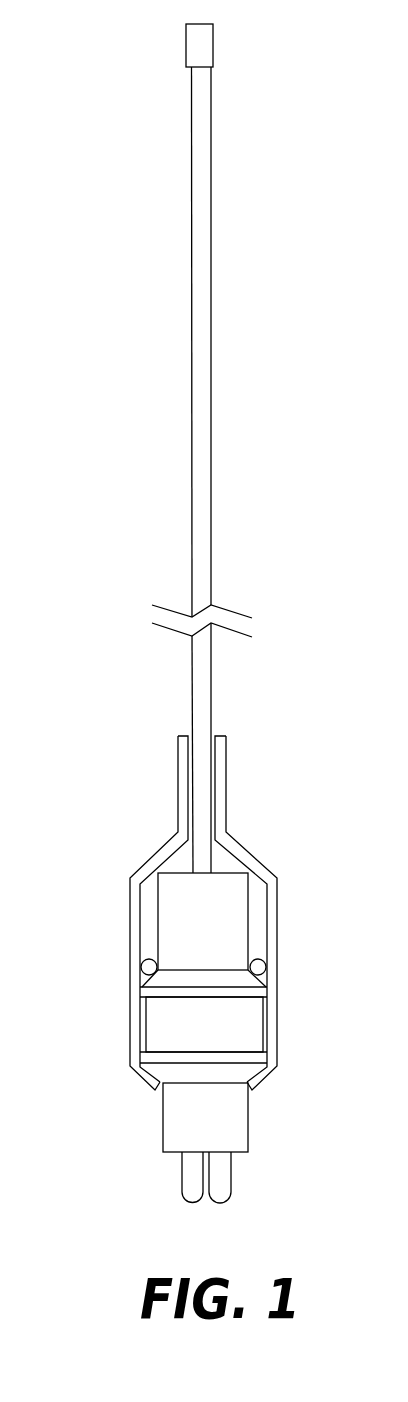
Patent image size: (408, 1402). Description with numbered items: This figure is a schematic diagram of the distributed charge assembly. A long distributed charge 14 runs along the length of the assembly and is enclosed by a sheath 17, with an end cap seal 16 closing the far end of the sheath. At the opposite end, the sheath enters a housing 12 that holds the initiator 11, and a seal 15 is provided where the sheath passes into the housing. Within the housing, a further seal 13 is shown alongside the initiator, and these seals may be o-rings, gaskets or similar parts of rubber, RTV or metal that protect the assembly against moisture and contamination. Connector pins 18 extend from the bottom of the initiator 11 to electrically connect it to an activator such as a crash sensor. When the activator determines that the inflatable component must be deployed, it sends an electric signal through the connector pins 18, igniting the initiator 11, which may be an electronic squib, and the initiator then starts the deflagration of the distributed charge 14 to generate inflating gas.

The initiator 11 is at (248, 1133).
The housing 12 is at (128, 946).
The seal 13 is at (260, 967).
The distributed charge 14 is at (200, 490).
The seal 15 is at (215, 723).
The end cap seal 16 is at (186, 42).
The sheath 17 is at (191, 367).
The connector pins 18 is at (181, 1178).